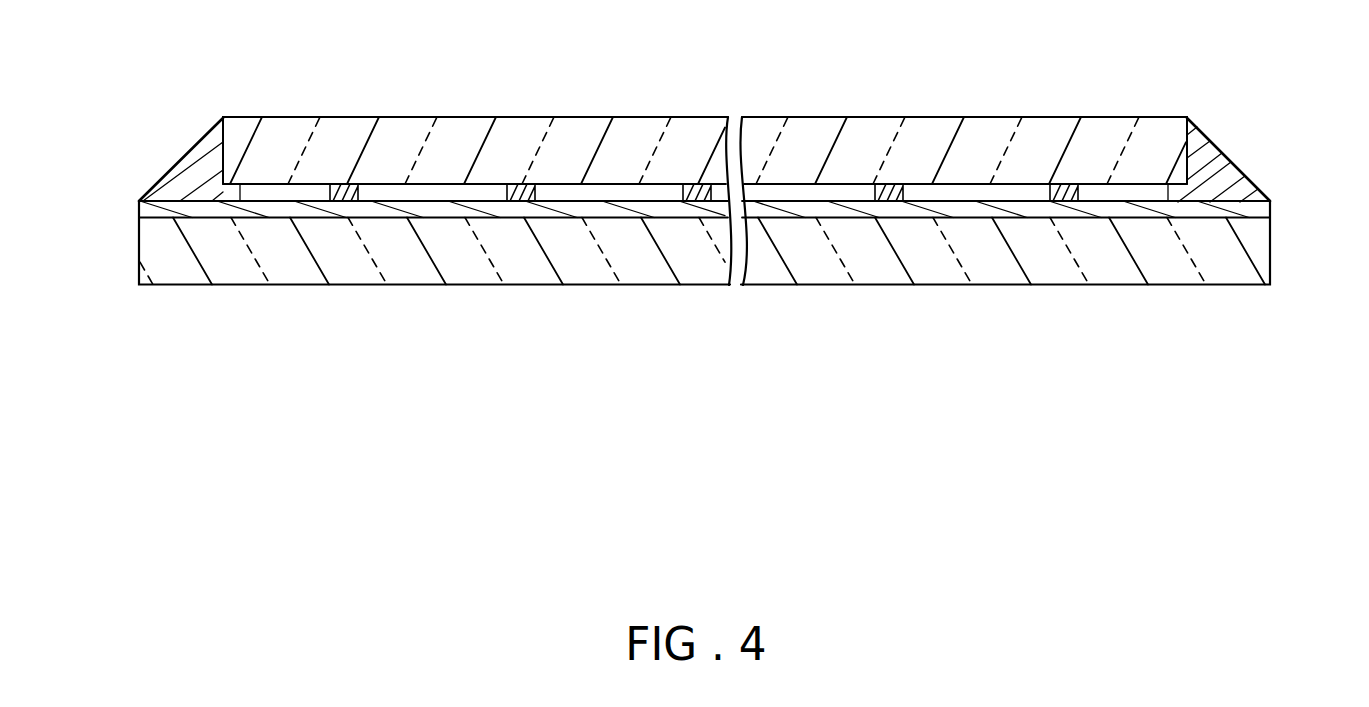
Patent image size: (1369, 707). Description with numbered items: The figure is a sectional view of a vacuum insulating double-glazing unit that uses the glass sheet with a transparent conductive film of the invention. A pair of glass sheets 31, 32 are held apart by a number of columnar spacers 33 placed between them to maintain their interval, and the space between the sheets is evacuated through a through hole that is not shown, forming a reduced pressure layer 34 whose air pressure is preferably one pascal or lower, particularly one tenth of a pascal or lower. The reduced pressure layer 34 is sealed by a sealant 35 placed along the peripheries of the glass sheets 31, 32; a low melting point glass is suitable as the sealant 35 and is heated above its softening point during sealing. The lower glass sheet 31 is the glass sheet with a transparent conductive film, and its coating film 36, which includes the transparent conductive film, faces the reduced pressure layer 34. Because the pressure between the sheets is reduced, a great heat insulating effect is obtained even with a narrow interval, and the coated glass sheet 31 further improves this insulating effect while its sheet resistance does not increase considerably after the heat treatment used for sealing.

The glass sheet 31 is at (998, 270).
The glass sheet 32 is at (985, 150).
The columnar spacers 33 is at (344, 184).
The reduced pressure layer 34 is at (609, 193).
The sealant 35 is at (182, 188).
The coating film 36 is at (152, 211).